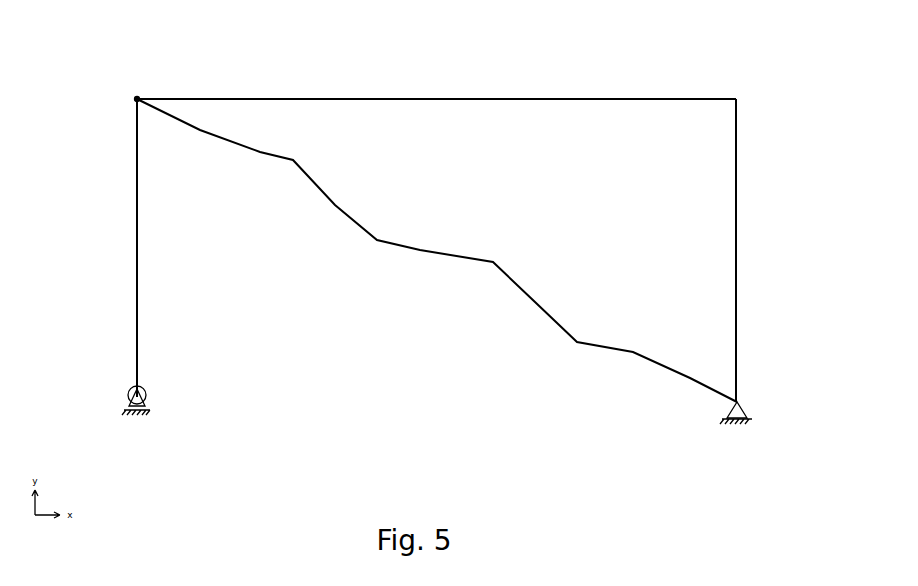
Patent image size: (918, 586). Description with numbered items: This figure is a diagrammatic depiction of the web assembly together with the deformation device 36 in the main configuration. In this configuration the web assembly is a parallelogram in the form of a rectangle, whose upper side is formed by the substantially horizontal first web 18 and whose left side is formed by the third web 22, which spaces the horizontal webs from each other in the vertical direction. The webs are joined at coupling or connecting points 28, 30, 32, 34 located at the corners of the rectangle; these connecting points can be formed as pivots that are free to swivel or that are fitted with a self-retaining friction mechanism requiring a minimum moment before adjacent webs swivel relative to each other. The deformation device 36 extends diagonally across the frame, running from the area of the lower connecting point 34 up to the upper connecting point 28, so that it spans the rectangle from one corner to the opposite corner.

The first web 18 is at (418, 98).
The third web 22 is at (133, 222).
The coupling or connecting point 28 is at (132, 96).
The coupling or connecting point 30 is at (738, 96).
The coupling or connecting point 32 is at (122, 385).
The coupling or connecting point 34 is at (740, 400).
The deformation device 36 is at (440, 250).